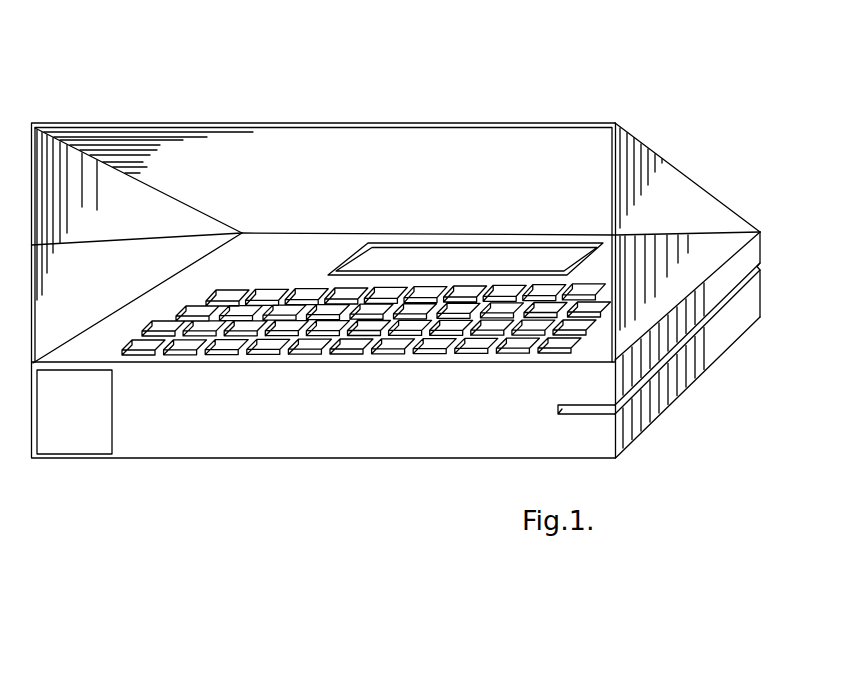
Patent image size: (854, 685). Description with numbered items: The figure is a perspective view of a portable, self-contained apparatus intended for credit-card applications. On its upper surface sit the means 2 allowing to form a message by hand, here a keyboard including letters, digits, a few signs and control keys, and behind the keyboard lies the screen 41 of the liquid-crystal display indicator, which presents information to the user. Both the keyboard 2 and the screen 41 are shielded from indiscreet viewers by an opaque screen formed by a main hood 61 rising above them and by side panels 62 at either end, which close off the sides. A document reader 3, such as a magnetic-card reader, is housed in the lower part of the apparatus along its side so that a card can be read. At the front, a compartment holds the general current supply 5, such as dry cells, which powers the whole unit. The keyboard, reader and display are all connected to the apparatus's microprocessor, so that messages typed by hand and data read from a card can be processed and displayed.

The means allowing to form a message by hand 2 is at (350, 343).
The document reader 3 is at (687, 355).
The general current supply 5 is at (78, 415).
The screen 41 is at (470, 257).
The main hood 61 is at (317, 162).
The side panels 62 is at (74, 177).